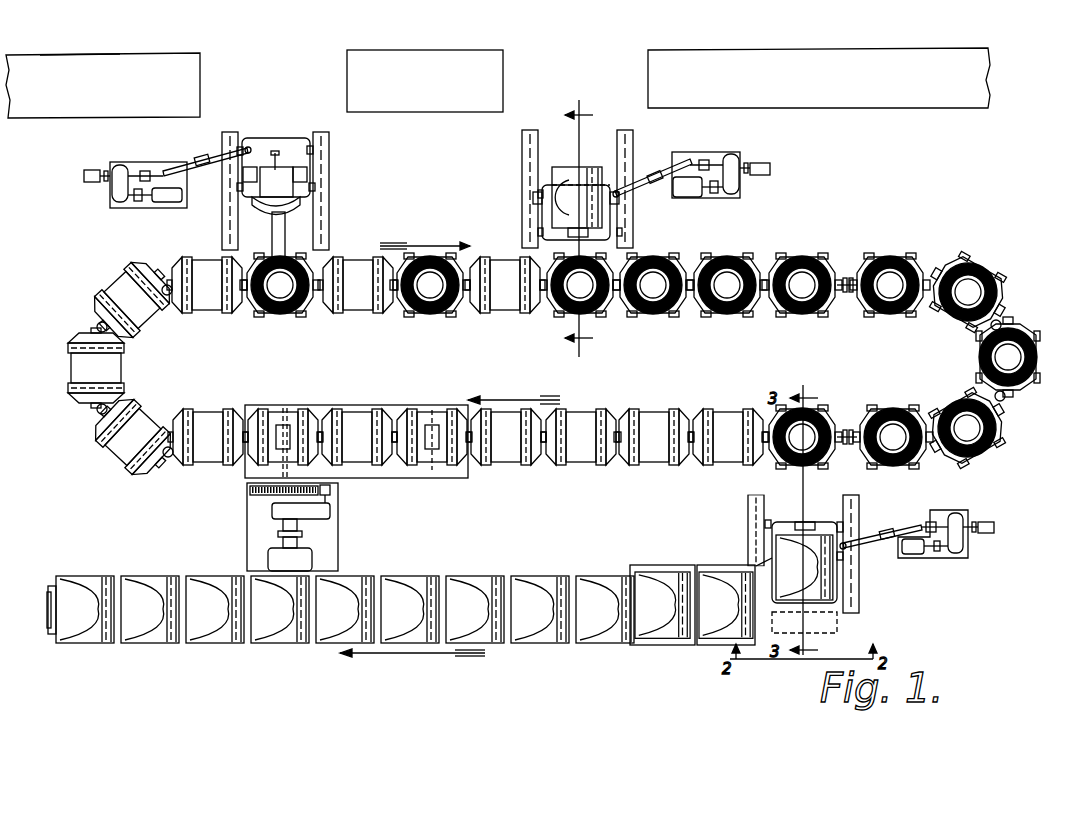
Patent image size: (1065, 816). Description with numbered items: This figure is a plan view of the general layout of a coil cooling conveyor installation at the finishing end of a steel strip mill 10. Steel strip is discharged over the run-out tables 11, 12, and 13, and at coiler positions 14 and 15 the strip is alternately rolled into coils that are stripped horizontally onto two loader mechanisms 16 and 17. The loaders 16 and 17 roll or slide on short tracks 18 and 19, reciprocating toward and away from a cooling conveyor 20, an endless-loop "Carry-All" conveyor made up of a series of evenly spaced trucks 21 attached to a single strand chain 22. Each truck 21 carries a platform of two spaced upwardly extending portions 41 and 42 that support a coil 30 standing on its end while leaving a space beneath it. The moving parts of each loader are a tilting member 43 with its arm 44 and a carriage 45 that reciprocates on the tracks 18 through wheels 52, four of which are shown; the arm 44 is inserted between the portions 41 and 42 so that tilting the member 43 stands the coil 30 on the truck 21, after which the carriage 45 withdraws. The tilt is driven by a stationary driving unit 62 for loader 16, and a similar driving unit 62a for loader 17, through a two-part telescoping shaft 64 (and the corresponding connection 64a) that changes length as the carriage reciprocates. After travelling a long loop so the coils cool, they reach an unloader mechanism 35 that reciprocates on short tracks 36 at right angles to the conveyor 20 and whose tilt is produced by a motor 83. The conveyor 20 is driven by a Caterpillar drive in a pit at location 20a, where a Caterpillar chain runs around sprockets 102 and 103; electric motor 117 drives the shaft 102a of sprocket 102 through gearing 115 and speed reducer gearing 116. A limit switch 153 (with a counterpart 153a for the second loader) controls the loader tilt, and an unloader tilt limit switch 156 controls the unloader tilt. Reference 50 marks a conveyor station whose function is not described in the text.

The finishing end of steel strip mill 10 is at (170, 62).
The run-out table 11 is at (127, 63).
The run-out table 12 is at (403, 60).
The run-out table 13 is at (693, 55).
The coiler position 14 is at (285, 52).
The coiler position 15 is at (590, 60).
The loader mechanism 16 is at (290, 145).
The loader mechanism 17 is at (548, 190).
The short track 18 is at (330, 168).
The short track 19 is at (637, 148).
The cooling conveyor 20 is at (765, 252).
The Caterpillar drive location 20a is at (388, 479).
The truck 21 is at (110, 273).
The single strand chain 22 is at (936, 263).
The coil 30 is at (280, 318).
The unloader mechanism 35 is at (858, 522).
The short track 36 is at (747, 520).
The upwardly extending portion 41 is at (92, 284).
The upwardly extending portion 42 is at (133, 263).
The tilting member 43 is at (300, 201).
The arm 44 is at (285, 235).
The carriage 45 is at (258, 148).
The conveyor station 50 is at (638, 563).
The wheel 52 is at (318, 149).
The driving unit 62 is at (172, 202).
The driving unit 62a is at (686, 197).
The telescoping shaft 64 is at (210, 162).
The actuating rod 64a is at (660, 176).
The motor 83 is at (915, 553).
The sprocket 102 is at (270, 410).
The shaft 102a is at (292, 410).
The sprocket 103 is at (420, 397).
The gearing 115 is at (260, 497).
The speed reducer gearing 116 is at (325, 515).
The electric motor 117 is at (300, 561).
The limit switch 153 is at (100, 172).
The control valve 153a is at (762, 163).
The unloader tilt limit switch 156 is at (990, 520).